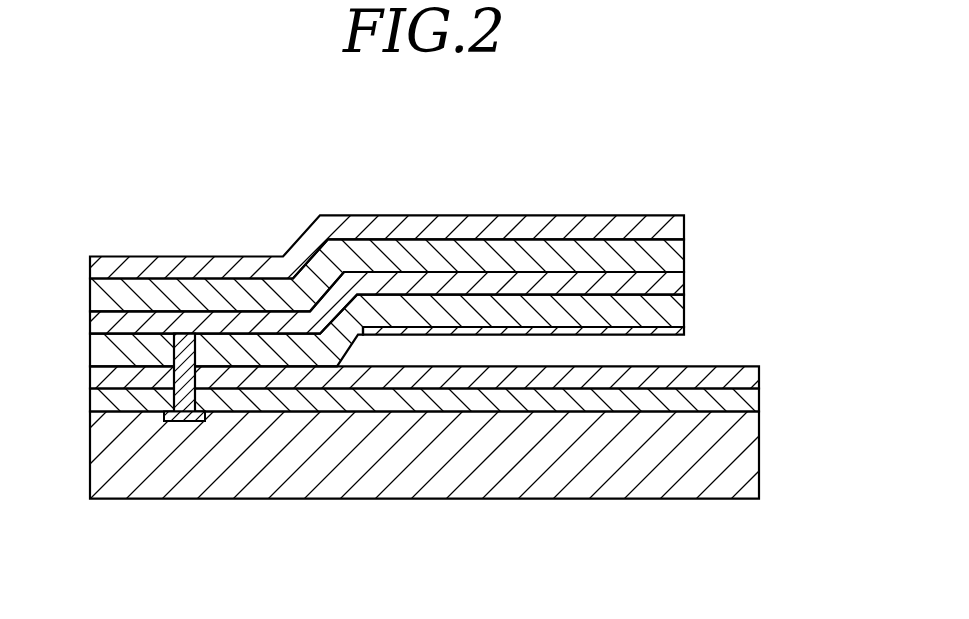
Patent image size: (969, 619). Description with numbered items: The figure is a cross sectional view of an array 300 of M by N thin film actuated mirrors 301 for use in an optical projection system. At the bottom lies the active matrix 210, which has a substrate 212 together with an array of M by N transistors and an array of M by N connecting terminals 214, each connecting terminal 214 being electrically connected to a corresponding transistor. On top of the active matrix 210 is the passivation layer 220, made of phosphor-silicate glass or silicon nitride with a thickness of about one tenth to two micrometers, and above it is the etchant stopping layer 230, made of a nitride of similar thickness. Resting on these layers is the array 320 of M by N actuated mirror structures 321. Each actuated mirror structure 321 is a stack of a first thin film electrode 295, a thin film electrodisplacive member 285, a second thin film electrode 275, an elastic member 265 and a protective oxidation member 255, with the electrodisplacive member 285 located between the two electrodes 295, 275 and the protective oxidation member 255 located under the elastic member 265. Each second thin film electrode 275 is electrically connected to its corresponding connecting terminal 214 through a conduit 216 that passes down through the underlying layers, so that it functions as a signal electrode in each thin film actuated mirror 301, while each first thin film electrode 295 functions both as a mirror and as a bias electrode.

The array of M×N thin film actuated mirrors 300 is at (672, 89).
The thin film actuated mirror 301 is at (685, 187).
The array of M×N actuated mirror structures 320 is at (688, 202).
The actuated mirror structure 321 is at (796, 195).
The first thin film electrode 295 is at (687, 220).
The thin film electrodisplacive member 285 is at (687, 243).
The second thin film electrode 275 is at (687, 273).
The elastic member 265 is at (687, 300).
The protective oxidation member 255 is at (687, 327).
The etchant stopping layer 230 is at (742, 382).
The passivation layer 220 is at (742, 403).
The conduit 216 is at (186, 342).
The connecting terminal 214 is at (178, 418).
The substrate 212 is at (742, 462).
The active matrix 210 is at (72, 410).